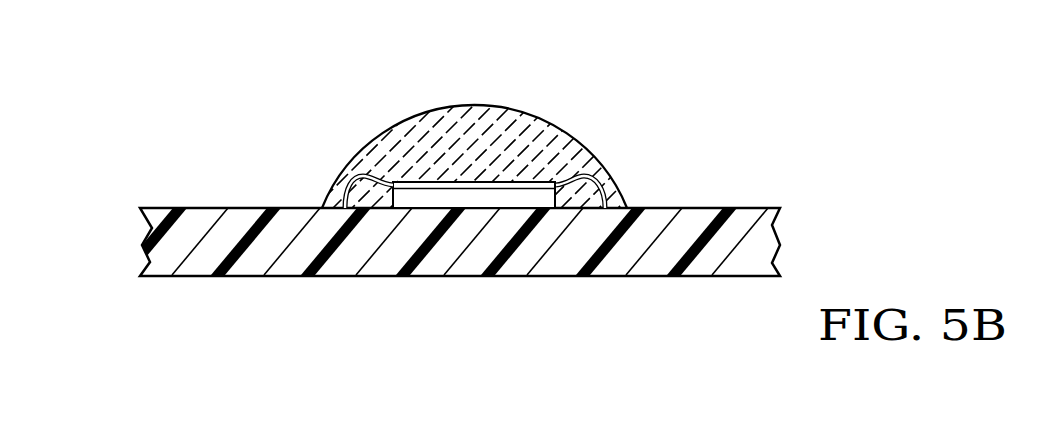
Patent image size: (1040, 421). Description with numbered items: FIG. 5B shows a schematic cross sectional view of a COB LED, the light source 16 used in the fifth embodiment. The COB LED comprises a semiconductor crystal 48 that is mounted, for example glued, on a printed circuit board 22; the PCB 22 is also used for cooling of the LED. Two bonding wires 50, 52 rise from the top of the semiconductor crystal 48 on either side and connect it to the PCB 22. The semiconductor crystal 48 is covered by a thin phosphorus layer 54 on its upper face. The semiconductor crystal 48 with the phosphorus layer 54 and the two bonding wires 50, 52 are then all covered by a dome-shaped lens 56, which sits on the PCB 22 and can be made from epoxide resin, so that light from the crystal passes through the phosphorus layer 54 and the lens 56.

The light emitting device 16 is at (470, 142).
The printed circuit board 22 is at (290, 263).
The semiconductor crystal 48 is at (538, 197).
The bonding wire 50 is at (352, 168).
The bonding wire 52 is at (601, 178).
The phosphorus layer 54 is at (500, 183).
The lens 56 is at (445, 133).